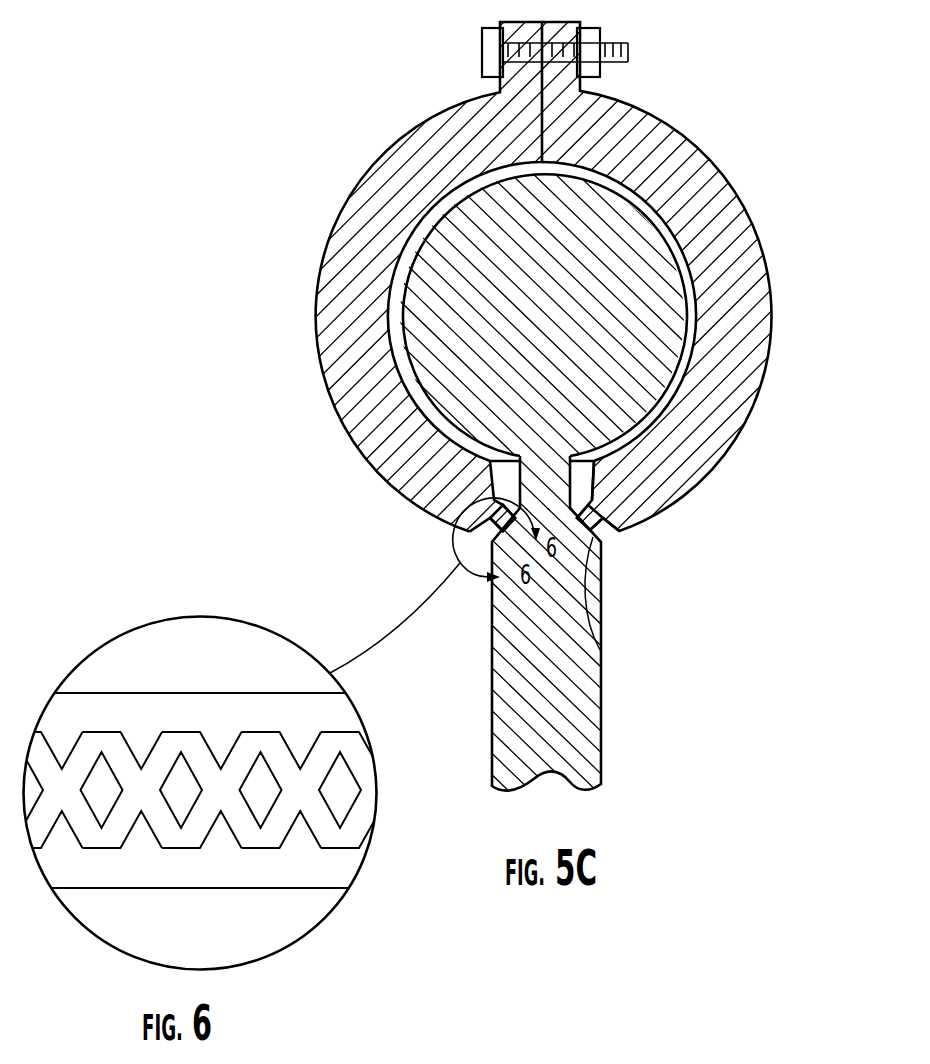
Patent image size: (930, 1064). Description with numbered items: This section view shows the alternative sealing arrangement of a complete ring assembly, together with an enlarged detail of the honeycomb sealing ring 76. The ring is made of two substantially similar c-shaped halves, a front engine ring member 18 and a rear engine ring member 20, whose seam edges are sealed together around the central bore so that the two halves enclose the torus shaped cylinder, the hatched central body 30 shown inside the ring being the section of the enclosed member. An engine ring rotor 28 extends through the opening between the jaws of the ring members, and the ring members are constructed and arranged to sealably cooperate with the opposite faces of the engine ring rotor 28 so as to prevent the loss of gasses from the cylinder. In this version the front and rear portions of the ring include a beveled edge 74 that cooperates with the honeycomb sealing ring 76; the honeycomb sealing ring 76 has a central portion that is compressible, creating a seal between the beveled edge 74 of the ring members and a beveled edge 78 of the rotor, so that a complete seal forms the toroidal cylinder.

In FIG. 5C, the front engine ring member 18 is at (720, 186).
In FIG. 5C, the rear engine ring member 20 is at (353, 225).
In FIG. 5C, the engine ring rotor 28 is at (573, 735).
In FIG. 5C, the pipe 30 is at (670, 324).
In FIG. 5C, the beveled edge 74 is at (604, 520).
In FIG. 5C, the honeycomb sealing ring 76 is at (596, 523).
In FIG. 6, the honeycomb sealing ring 76 is at (130, 708).
In FIG. 5C, the beveled edge 78 is at (600, 650).